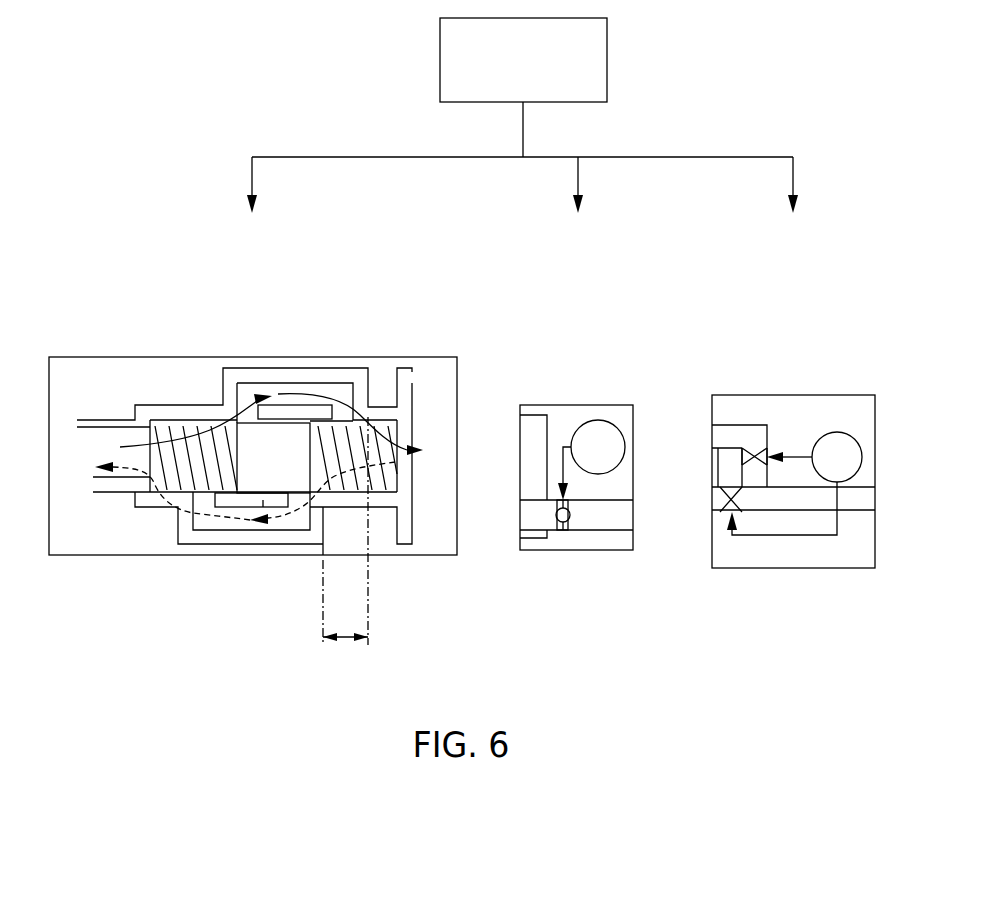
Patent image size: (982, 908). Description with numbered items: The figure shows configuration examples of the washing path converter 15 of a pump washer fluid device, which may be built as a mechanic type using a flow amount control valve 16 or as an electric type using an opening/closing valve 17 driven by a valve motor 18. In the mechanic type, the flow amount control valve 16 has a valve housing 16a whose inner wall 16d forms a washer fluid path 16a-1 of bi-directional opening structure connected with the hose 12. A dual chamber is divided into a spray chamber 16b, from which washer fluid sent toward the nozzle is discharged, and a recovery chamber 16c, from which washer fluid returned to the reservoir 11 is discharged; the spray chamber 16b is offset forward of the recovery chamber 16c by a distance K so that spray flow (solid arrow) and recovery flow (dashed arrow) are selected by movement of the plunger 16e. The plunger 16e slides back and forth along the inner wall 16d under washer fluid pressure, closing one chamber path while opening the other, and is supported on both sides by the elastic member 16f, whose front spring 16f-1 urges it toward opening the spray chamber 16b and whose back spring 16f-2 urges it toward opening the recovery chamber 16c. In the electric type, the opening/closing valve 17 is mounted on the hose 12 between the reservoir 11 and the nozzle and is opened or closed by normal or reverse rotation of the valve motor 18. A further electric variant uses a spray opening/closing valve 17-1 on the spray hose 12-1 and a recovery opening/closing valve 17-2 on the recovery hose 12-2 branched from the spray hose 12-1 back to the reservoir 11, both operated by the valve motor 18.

The washing path converter 15 is at (607, 60).
The flow amount control valve 16 is at (147, 603).
The valve housing 16a is at (143, 405).
The washer fluid path 16a-1 is at (105, 450).
The spray chamber 16b is at (346, 388).
The recovery chamber 16c is at (295, 523).
The inner wall 16d is at (268, 412).
The plunger 16e is at (243, 475).
The elastic member 16f is at (273, 361).
The front spring 16f-1 is at (197, 450).
The back spring 16f-2 is at (328, 430).
The reservoir 11 is at (533, 415).
The hose 12 is at (623, 498).
The spray hose 12-1 is at (718, 480).
The recovery hose 12-2 is at (757, 425).
The opening/closing valve 17 is at (563, 527).
The spray opening/closing valve 17-1 is at (722, 514).
The recovery opening/closing valve 17-2 is at (757, 463).
The valve motor 18 is at (602, 474).